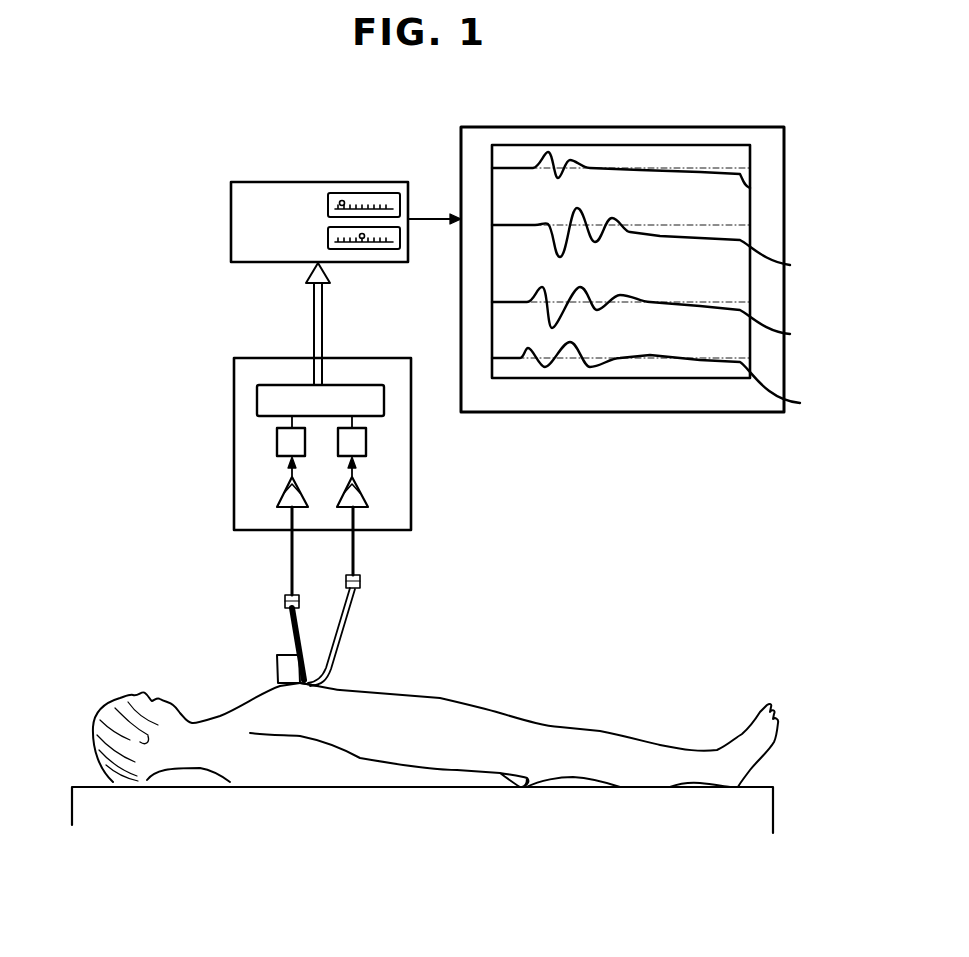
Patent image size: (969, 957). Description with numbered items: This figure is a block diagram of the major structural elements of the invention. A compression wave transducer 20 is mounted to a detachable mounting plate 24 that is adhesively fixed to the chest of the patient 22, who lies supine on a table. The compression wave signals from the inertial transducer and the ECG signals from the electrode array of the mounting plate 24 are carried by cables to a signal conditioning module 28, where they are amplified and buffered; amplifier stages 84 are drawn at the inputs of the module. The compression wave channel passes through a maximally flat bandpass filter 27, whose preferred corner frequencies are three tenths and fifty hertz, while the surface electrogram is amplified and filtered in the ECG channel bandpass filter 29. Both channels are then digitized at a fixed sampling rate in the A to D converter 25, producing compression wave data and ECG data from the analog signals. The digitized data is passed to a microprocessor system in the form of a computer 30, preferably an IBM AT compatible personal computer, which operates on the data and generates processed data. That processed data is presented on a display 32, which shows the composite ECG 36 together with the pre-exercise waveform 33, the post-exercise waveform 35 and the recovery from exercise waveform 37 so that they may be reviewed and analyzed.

The compression wave transducer 20 is at (283, 655).
The patient 22 is at (453, 683).
The detachable mounting plate 24 is at (278, 683).
The A to D converter 25 is at (257, 396).
The compression wave channel filter 27 is at (277, 443).
The signal conditioning module 28 is at (411, 517).
The ECG channel bandpass filter 29 is at (366, 438).
The computer 30 is at (310, 182).
The display 32 is at (582, 127).
The pre-exercise waveform 33 is at (790, 265).
The post-exercise waveform 35 is at (790, 334).
The composite ECG 36 is at (747, 190).
The recovery from exercise waveform 37 is at (800, 403).
The amplifier 84 is at (277, 500).